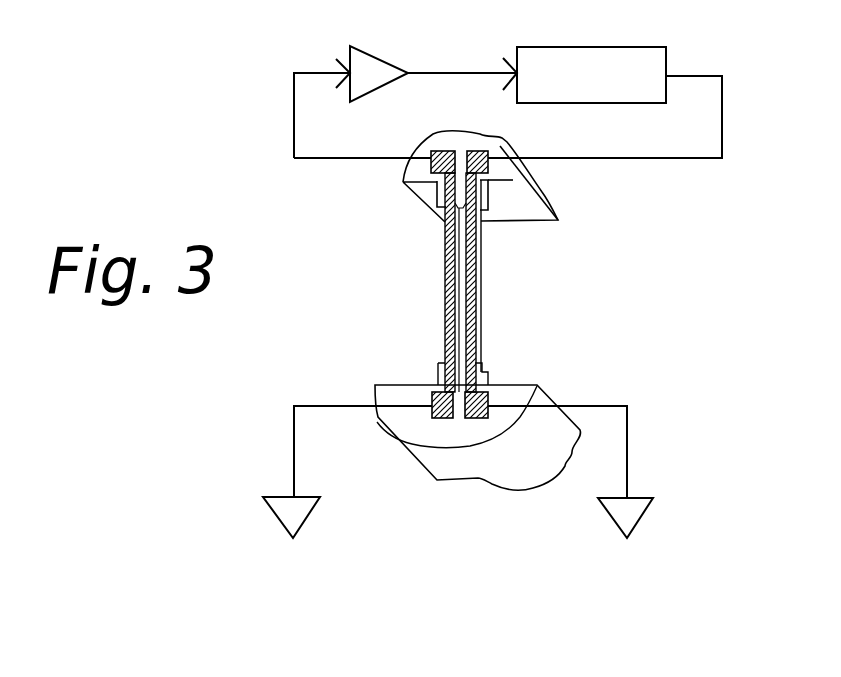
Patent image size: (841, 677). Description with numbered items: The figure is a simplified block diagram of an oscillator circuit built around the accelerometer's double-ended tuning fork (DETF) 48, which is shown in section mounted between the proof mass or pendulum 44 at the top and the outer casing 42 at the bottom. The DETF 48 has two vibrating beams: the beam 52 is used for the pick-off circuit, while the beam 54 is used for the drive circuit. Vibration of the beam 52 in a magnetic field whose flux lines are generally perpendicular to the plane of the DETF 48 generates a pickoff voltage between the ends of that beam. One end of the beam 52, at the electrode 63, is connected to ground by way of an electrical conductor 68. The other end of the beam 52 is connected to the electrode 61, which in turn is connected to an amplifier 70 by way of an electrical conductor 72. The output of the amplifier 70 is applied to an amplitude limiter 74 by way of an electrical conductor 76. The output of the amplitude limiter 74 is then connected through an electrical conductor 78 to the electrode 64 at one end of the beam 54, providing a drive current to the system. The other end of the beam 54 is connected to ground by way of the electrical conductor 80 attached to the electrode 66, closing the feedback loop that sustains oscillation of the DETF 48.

The outer casing 42 is at (387, 424).
The proof mass or pendulum 44 is at (452, 137).
The double-ended tuning fork (DETF) 48 is at (554, 280).
The beam 52 is at (445, 300).
The beam 54 is at (472, 268).
The electrode 61 is at (437, 152).
The electrode 63 is at (438, 418).
The electrode 64 is at (488, 153).
The electrode 66 is at (480, 418).
The electrical conductor 68 is at (293, 470).
The amplifier 70 is at (363, 63).
The electrical conductor 72 is at (293, 118).
The amplitude limiter 74 is at (590, 47).
The electrical conductor 76 is at (443, 72).
The electrical conductor 78 is at (693, 74).
The electrical conductor 80 is at (627, 478).